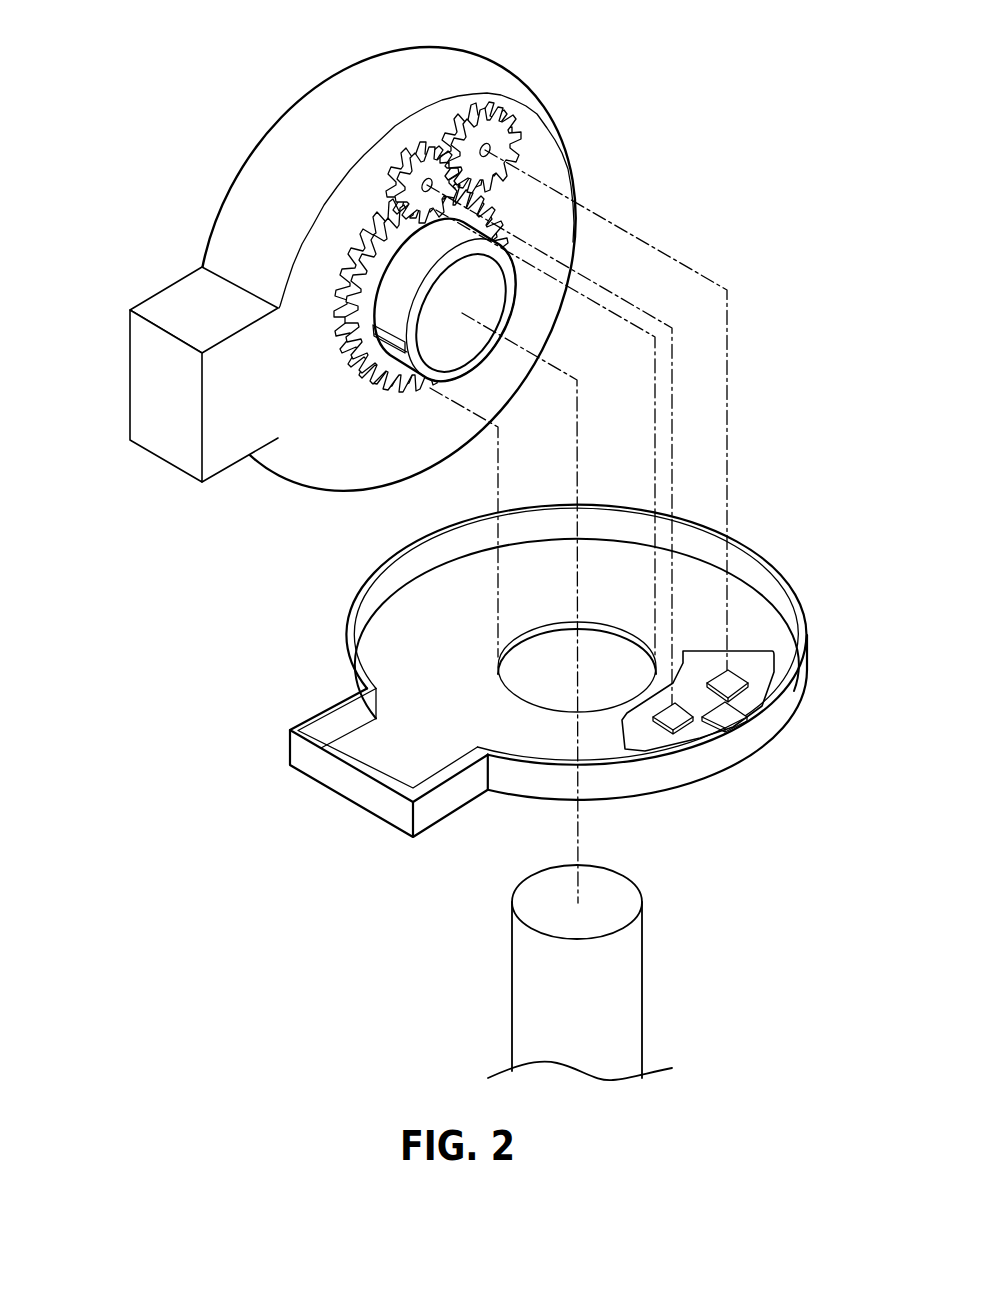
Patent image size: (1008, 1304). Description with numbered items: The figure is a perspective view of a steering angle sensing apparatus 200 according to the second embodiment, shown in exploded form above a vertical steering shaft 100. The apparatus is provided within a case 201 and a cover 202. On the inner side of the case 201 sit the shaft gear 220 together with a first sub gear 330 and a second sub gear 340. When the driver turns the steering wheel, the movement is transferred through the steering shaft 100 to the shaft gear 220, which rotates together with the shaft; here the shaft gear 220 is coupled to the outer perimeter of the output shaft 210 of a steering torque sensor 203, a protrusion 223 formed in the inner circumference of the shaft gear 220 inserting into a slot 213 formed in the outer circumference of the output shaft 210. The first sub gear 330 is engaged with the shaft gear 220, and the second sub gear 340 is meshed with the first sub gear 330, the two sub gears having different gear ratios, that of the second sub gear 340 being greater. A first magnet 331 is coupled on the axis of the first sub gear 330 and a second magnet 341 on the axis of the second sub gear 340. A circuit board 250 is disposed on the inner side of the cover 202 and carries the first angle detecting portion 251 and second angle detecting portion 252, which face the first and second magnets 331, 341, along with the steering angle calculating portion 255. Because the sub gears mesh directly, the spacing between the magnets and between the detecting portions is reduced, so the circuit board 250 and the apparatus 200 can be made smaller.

The steering shaft 100 is at (628, 996).
The steering angle sensing apparatus 200 is at (593, 187).
The case 201 is at (150, 371).
The cover 202 is at (350, 783).
The steering torque sensor 203 is at (217, 222).
The output shaft 210 is at (513, 297).
The slot 213 is at (403, 335).
The shaft gear 220 is at (377, 250).
The protrusion 223 is at (367, 343).
The circuit board 250 is at (753, 658).
The first angle detecting portion 251 is at (680, 717).
The second angle detecting portion 252 is at (749, 669).
The steering angle calculating portion 255 is at (745, 703).
The first sub gear 330 is at (421, 150).
The first magnet 331 is at (401, 193).
The second sub gear 340 is at (499, 105).
The second magnet 341 is at (493, 153).